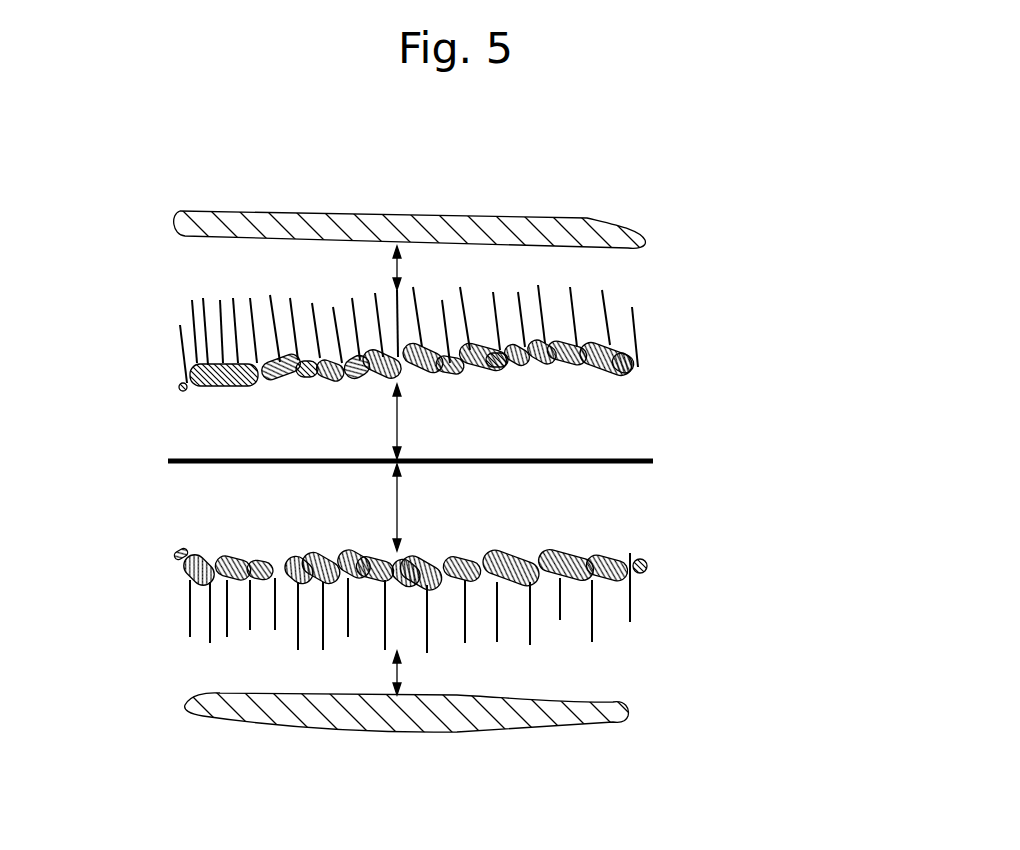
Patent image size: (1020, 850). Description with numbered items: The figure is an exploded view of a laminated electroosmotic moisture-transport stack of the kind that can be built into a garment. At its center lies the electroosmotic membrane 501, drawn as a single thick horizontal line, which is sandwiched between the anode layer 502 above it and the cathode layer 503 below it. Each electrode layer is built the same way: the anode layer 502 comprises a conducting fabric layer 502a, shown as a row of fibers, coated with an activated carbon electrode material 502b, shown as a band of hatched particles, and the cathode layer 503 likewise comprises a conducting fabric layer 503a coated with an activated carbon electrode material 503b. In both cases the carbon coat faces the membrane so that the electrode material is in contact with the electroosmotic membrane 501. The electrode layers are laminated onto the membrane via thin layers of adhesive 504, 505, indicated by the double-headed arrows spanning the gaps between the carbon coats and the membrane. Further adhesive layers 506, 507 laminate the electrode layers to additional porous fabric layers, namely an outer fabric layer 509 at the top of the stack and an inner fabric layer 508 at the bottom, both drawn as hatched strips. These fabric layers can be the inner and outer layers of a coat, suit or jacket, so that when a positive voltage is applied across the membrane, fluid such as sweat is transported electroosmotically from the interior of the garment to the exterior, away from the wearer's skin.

The electroosmotic membrane 501 is at (182, 462).
The anode layer 502 is at (572, 339).
The conducting fabric layer 502a is at (633, 309).
The activated carbon electrode material 502b is at (633, 373).
The cathode layer 503 is at (569, 600).
The conducting fabric layer 503a is at (632, 600).
The activated carbon electrode material 503b is at (644, 561).
The adhesive layer 504 is at (393, 418).
The adhesive layer 505 is at (399, 508).
The adhesive layer 506 is at (393, 268).
The adhesive layer 507 is at (393, 672).
The inner porous fabric layer 508 is at (443, 718).
The outer porous fabric layer 509 is at (313, 214).